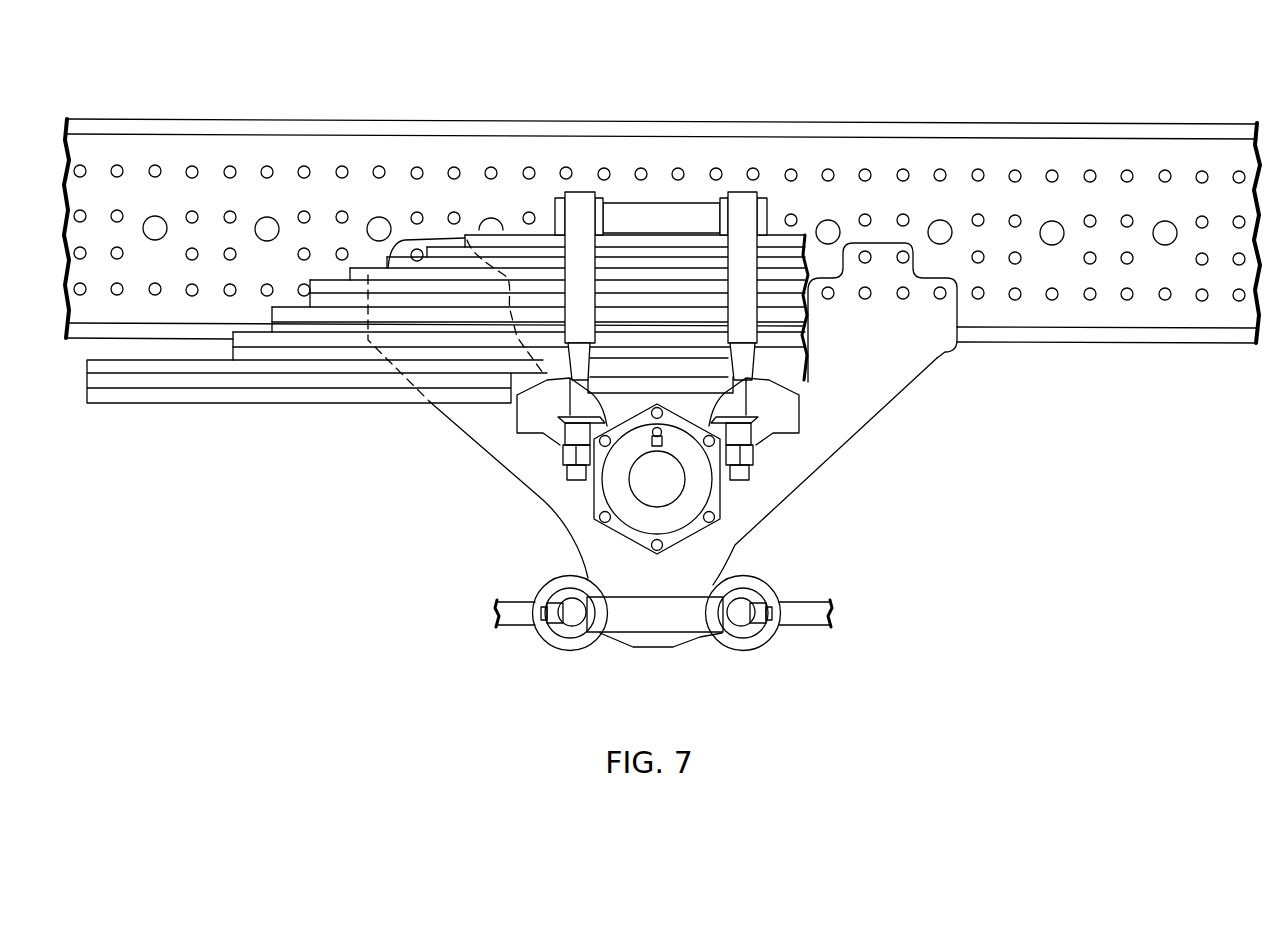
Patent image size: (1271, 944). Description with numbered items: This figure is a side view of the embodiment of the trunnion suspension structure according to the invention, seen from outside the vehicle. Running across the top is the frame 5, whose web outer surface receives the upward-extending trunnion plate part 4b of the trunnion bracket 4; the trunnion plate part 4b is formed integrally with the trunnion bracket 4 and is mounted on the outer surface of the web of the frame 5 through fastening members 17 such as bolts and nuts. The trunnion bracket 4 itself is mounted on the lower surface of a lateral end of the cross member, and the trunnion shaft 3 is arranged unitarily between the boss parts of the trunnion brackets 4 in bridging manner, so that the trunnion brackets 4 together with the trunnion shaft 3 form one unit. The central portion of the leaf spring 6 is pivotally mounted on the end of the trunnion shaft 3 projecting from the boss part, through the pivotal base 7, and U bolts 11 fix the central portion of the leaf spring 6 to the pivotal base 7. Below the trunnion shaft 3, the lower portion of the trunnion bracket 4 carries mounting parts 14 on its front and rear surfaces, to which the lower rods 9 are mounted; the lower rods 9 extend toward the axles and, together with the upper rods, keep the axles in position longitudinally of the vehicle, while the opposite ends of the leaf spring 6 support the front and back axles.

The trunnion shaft 3 is at (645, 478).
The trunnion bracket 4 is at (566, 530).
The trunnion plate part 4b is at (388, 290).
The frame 5 is at (1196, 355).
The leaf spring 6 is at (160, 395).
The pivotal base 7 is at (782, 422).
The lower rod 9 is at (515, 625).
The U bolt 11 is at (573, 208).
The mounting part 14 is at (592, 628).
The fastening member 17 is at (418, 248).